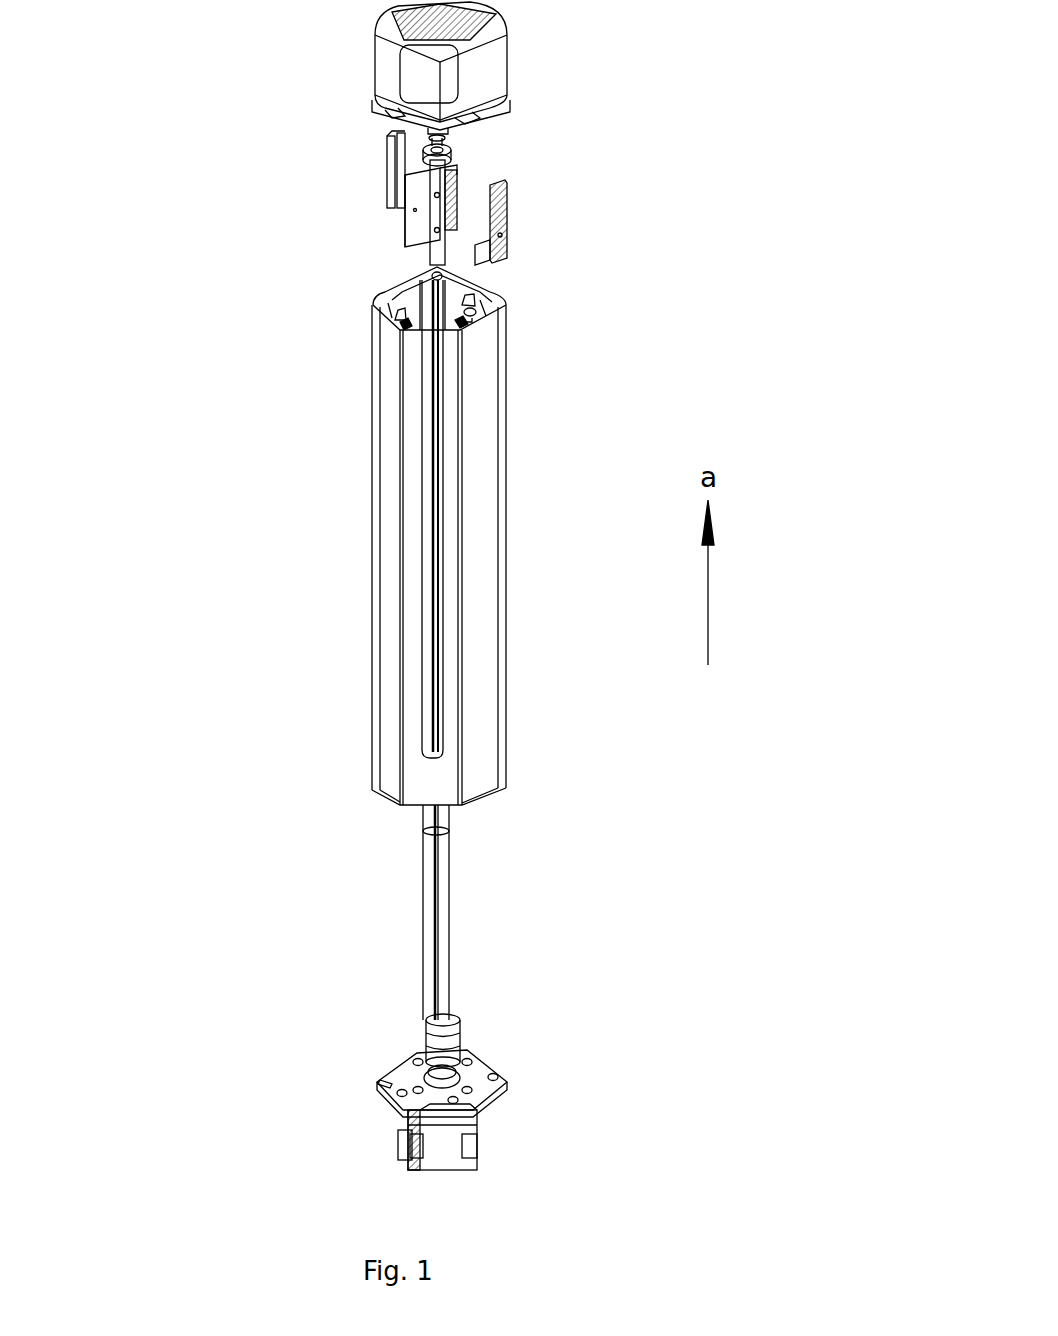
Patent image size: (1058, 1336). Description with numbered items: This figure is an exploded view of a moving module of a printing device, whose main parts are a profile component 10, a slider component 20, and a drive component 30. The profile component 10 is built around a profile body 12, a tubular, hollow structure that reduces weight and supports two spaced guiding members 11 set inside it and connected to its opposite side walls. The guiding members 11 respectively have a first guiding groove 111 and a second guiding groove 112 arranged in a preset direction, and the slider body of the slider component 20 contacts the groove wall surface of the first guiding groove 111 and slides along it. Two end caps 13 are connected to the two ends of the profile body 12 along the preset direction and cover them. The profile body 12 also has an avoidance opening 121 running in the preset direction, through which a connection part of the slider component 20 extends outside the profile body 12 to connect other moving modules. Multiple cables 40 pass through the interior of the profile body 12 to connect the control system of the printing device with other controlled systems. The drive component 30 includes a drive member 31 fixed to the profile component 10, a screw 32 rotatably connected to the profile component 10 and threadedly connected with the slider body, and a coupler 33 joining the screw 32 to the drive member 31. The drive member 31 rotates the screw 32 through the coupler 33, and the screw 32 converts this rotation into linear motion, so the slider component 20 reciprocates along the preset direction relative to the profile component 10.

The profile component 10 is at (295, 70).
The guiding member 11 is at (400, 305).
The first guiding groove 111 is at (396, 265).
The second guiding groove 112 is at (492, 330).
The profile body 12 is at (400, 400).
The avoidance opening 121 is at (455, 522).
The end cap 13 is at (416, 90).
The slider component 20 is at (545, 188).
The drive component 30 is at (318, 935).
The drive member 31 is at (420, 1148).
The screw 32 is at (442, 960).
The coupler 33 is at (437, 1035).
The cable 40 is at (432, 885).